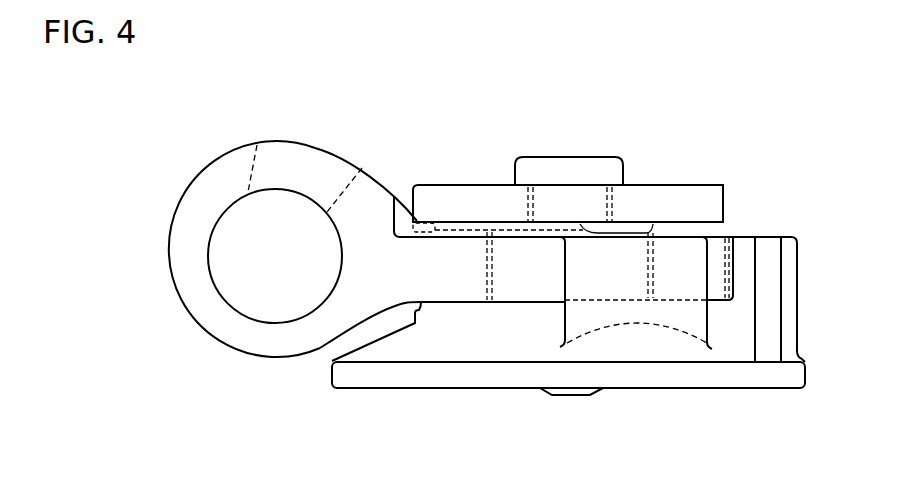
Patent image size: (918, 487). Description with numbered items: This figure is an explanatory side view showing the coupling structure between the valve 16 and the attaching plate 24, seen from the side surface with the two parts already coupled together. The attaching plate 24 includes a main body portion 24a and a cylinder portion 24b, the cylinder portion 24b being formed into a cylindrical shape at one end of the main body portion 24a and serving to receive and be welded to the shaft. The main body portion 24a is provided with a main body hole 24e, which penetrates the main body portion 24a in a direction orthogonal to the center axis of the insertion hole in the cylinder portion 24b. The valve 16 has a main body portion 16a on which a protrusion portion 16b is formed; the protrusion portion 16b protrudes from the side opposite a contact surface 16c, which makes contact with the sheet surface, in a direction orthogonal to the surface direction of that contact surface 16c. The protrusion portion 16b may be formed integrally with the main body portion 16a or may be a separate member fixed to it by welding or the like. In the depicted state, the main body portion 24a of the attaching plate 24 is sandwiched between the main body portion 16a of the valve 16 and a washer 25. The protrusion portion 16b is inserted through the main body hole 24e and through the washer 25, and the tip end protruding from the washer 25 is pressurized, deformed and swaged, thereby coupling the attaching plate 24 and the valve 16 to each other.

The attaching plate 24 is at (236, 116).
The cylinder portion 24b is at (191, 185).
The main body portion 24a is at (431, 232).
The main body hole 24e is at (492, 280).
The washer 25 is at (723, 200).
The valve 16 is at (831, 359).
The protrusion portion 16b is at (583, 157).
The main body portion 16a is at (808, 377).
The contact surface 16c is at (745, 390).